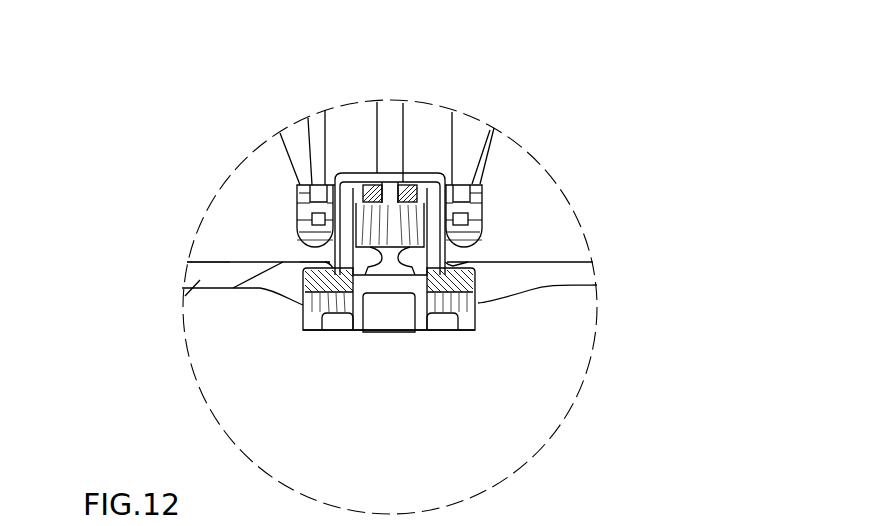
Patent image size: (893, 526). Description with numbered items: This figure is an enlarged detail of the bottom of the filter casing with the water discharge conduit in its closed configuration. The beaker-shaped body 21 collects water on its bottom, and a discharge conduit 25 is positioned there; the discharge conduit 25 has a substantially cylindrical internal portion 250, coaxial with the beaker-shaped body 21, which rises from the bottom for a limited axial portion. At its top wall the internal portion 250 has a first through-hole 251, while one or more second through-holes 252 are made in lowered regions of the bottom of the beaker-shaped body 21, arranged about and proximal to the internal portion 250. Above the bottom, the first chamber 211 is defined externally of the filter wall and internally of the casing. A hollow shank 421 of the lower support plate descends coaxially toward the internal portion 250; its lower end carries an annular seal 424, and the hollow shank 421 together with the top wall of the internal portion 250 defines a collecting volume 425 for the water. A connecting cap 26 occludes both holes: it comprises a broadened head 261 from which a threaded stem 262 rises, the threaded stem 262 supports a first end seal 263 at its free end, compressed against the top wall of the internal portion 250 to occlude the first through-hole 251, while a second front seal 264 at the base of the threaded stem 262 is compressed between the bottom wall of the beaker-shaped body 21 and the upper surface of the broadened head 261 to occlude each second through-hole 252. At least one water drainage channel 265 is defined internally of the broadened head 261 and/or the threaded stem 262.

The beaker-shaped body 21 is at (183, 295).
The first chamber 211 is at (250, 213).
The second through-hole 252 is at (323, 262).
The discharge conduit 25 is at (367, 172).
The internal portion 250 is at (348, 173).
The first through-hole 251 is at (407, 133).
The first end seal 263 is at (485, 197).
The annular seal 424 is at (483, 218).
The hollow shank 421 is at (480, 183).
The collecting volume 425 is at (430, 137).
The threaded stem 262 is at (395, 225).
The connecting cap 26 is at (303, 330).
The second front seal 264 is at (302, 304).
The water drainage channel 265 is at (396, 300).
The broadened head 261 is at (362, 330).